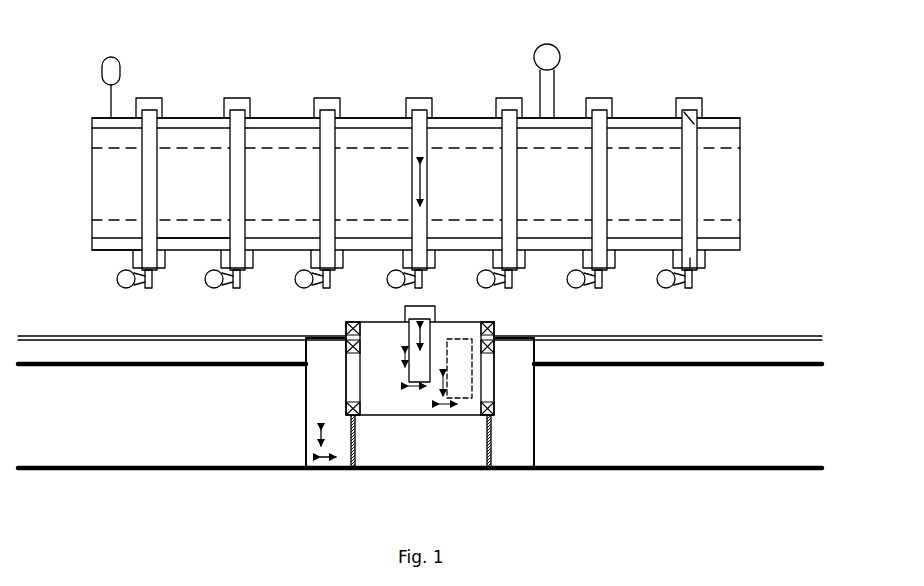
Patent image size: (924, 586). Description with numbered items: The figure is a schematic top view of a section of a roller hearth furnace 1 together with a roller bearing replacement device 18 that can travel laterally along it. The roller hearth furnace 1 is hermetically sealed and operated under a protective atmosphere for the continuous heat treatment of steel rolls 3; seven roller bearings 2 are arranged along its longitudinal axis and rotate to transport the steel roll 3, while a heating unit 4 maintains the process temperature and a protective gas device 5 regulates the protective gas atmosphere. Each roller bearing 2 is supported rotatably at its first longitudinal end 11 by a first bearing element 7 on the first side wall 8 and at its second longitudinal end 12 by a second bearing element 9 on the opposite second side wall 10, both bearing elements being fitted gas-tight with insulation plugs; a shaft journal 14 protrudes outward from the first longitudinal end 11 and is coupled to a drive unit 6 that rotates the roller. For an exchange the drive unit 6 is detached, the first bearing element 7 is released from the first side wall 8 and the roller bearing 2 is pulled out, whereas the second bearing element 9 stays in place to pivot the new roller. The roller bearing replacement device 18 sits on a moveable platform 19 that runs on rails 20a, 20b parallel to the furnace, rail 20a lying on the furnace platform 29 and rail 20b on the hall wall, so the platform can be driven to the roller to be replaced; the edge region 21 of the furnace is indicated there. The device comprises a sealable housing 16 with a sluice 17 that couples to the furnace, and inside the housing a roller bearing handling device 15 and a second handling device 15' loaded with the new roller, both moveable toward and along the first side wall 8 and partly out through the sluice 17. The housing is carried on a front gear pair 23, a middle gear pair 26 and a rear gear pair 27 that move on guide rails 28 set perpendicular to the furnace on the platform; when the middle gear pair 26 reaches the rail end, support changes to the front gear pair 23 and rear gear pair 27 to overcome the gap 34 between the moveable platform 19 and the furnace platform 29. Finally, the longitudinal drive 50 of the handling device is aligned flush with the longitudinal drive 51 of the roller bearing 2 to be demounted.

The roller hearth furnace 1 is at (278, 92).
The roller bearing 2 is at (690, 190).
The steel roll 3 is at (633, 180).
The heating unit 4 is at (119, 73).
The protective gas device 5 is at (562, 54).
The drive unit 6 is at (659, 278).
The first bearing element 7 is at (707, 256).
The first side wall 8 is at (198, 243).
The second bearing element 9 is at (690, 98).
The second side wall 10 is at (205, 118).
The first longitudinal end 11 is at (697, 262).
The second longitudinal end 12 is at (684, 122).
The shaft journal 14 is at (692, 284).
The roller bearing handling device 15 is at (298, 368).
The roller bearing handling device 15' is at (523, 375).
The housing 16 is at (410, 415).
The sluice 17 is at (436, 308).
The roller bearing replacement device 18 is at (342, 387).
The moveable platform 19 is at (318, 458).
The rail 20a is at (38, 366).
The rail 20b is at (60, 470).
The edge 21 is at (138, 243).
The front gear pair 23 is at (494, 330).
The middle gear pair 26 is at (494, 350).
The rear gear pair 27 is at (494, 407).
The guide rail 28 is at (355, 458).
The furnace platform 29 is at (415, 390).
The gap 34 is at (828, 338).
The longitudinal drive 50 is at (418, 346).
The longitudinal drive 51 is at (423, 186).